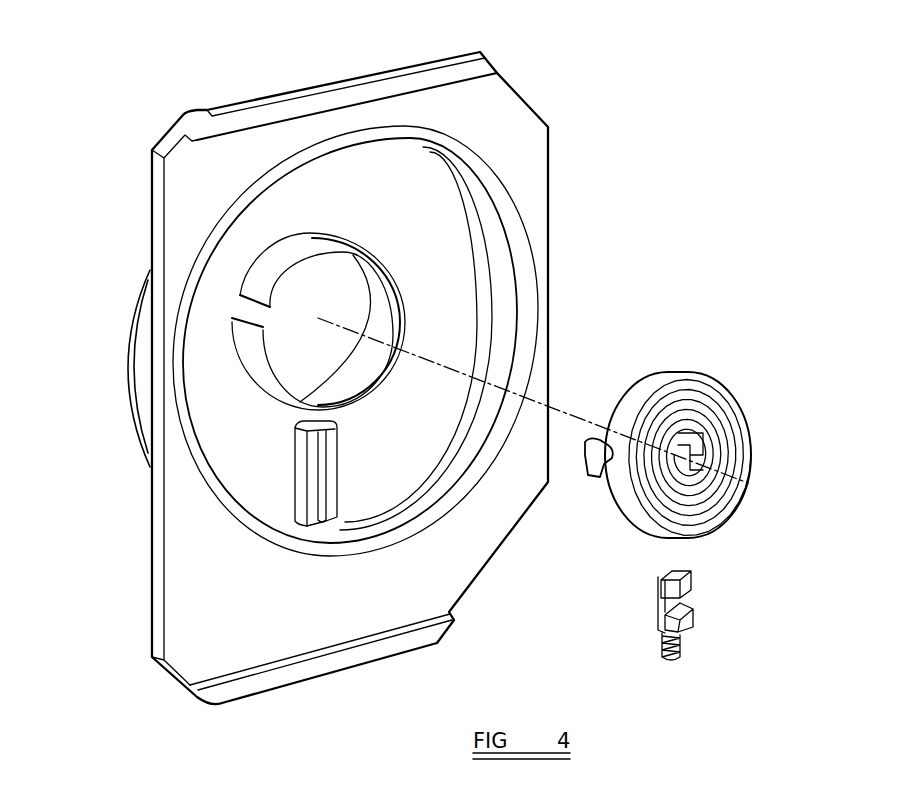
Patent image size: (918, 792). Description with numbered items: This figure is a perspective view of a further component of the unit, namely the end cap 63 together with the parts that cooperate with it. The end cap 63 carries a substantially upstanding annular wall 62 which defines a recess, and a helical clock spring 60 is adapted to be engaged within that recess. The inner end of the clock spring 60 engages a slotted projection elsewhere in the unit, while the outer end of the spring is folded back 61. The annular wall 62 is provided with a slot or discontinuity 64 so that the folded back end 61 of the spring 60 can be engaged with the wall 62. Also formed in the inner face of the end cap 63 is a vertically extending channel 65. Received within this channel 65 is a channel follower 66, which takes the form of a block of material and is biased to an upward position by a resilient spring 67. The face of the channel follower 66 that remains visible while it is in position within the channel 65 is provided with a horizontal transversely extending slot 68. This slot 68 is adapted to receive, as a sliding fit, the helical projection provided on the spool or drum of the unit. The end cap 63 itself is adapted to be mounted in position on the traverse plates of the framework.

The helical clock spring 60 is at (670, 380).
The folded back end 61 is at (585, 453).
The upstanding annular wall 62 is at (270, 270).
The end cap 63 is at (493, 120).
The slot or discontinuity 64 is at (247, 312).
The vertically extending channel 65 is at (297, 465).
The channel follower 66 is at (693, 617).
The resilient spring 67 is at (663, 638).
The horizontal transversely extending slot 68 is at (693, 602).